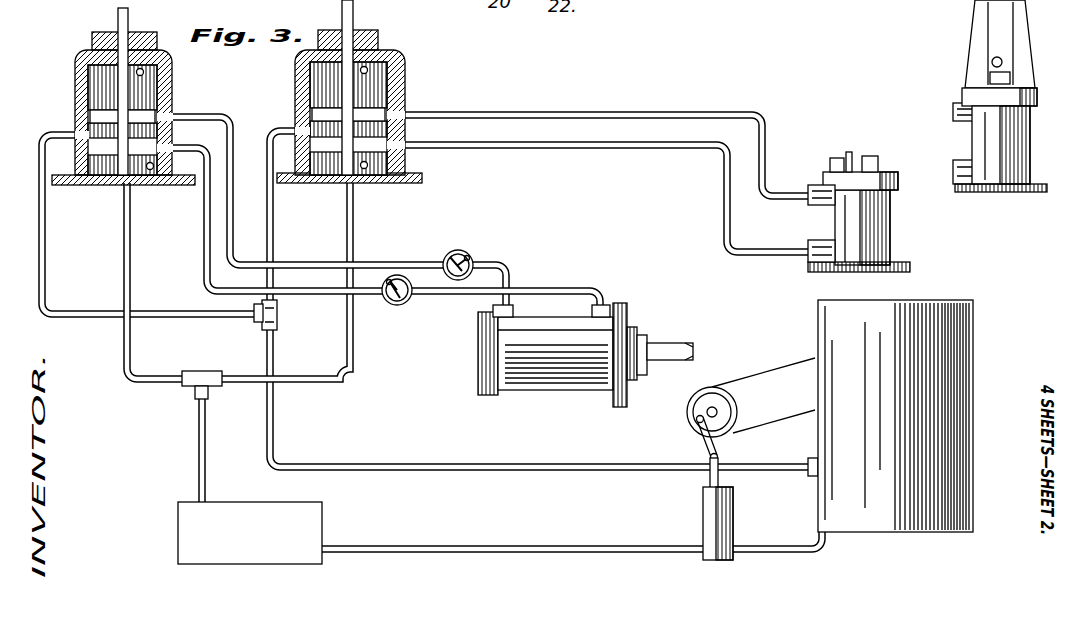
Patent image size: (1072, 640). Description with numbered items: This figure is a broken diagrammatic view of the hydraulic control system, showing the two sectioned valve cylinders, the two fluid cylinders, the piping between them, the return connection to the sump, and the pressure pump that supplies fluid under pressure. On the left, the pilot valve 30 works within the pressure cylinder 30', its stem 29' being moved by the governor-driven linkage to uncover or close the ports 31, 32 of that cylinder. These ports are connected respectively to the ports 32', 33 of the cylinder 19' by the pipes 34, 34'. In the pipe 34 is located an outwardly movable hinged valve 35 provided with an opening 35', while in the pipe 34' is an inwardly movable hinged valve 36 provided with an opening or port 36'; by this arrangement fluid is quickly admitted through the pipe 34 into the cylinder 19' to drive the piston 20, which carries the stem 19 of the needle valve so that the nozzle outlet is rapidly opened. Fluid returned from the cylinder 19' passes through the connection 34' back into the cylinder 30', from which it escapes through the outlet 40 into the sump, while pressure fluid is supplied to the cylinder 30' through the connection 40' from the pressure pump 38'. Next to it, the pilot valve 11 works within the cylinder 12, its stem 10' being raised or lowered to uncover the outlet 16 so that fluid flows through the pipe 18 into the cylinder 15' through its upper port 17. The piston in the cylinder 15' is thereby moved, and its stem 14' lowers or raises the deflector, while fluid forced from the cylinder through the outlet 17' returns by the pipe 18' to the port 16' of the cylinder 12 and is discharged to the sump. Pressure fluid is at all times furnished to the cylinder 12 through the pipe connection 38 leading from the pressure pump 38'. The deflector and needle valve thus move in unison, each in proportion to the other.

The stem 29' is at (95, 88).
The cylinder 30' is at (131, 111).
The pilot valve 30 is at (159, 96).
The port 31 is at (163, 120).
The port 32 is at (185, 139).
The outlet 40 is at (178, 135).
The connection 40' is at (159, 232).
The stem 10' is at (371, 87).
The cylinder 12 is at (372, 91).
The pilot valve 11 is at (340, 118).
The port 16 is at (422, 102).
The port 16' is at (427, 156).
The pipe 18 is at (608, 139).
The pipe 18' is at (608, 198).
The pipe 34' is at (360, 215).
The pipe 34 is at (421, 234).
The inwardly movable hinged valve 36 is at (464, 250).
The opening or port 36' is at (447, 246).
The outwardly movable hinged valve 35 is at (390, 326).
The opening 35' is at (385, 329).
The port 33 is at (490, 306).
The port 32' is at (640, 307).
The cylinder 19' is at (468, 353).
The stem 19 is at (670, 367).
The piston 20 is at (563, 358).
The pipe connection 38 is at (546, 303).
The pressure pump 38' is at (736, 509).
The stem 14' is at (927, 86).
The port 17 is at (875, 151).
The port 17' is at (876, 211).
The cylinder 15' is at (923, 136).